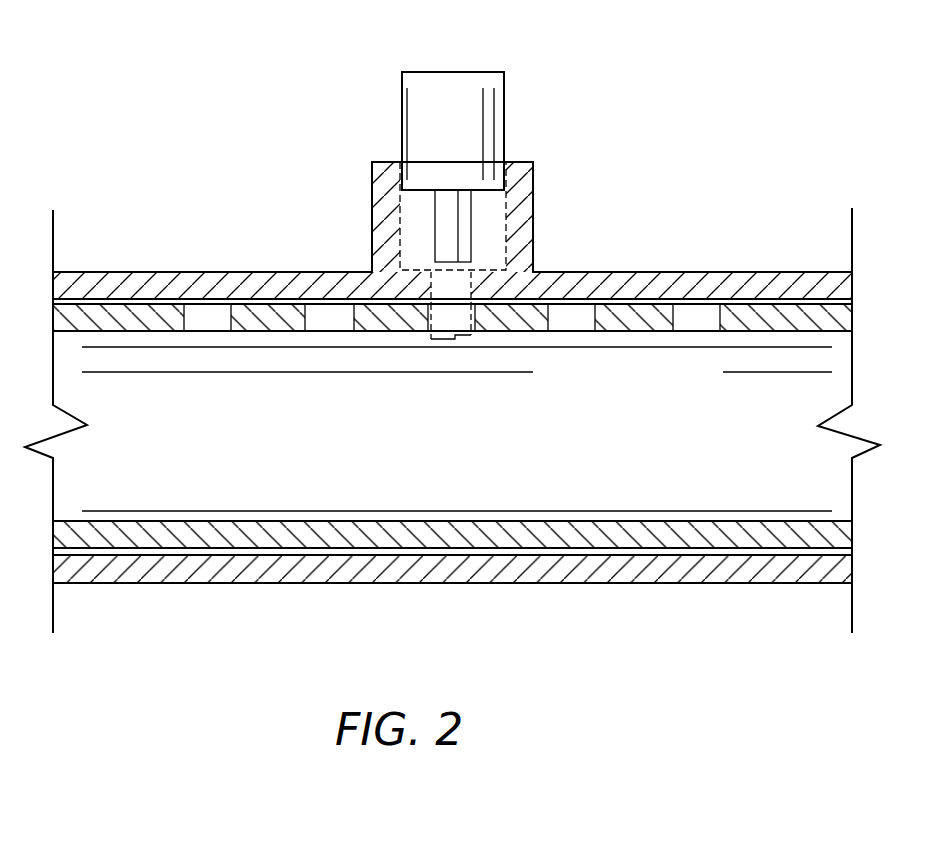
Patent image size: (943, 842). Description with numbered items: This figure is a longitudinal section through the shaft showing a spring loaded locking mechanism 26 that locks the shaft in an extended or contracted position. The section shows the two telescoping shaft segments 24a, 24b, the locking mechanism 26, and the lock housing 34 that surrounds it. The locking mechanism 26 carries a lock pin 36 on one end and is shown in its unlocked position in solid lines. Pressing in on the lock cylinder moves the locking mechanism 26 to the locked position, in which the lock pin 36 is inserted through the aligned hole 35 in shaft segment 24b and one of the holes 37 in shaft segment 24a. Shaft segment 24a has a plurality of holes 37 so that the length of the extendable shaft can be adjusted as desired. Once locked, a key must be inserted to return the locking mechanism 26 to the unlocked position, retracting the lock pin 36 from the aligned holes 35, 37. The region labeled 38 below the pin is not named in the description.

The locking mechanism 26 is at (400, 80).
The lock housing 34 is at (533, 203).
The lock pin 36 is at (433, 243).
The hole 35 is at (447, 287).
The shaft segment 24a is at (90, 331).
The shaft segment 24b is at (720, 272).
The holes 37 is at (197, 331).
The slot 38 is at (455, 339).